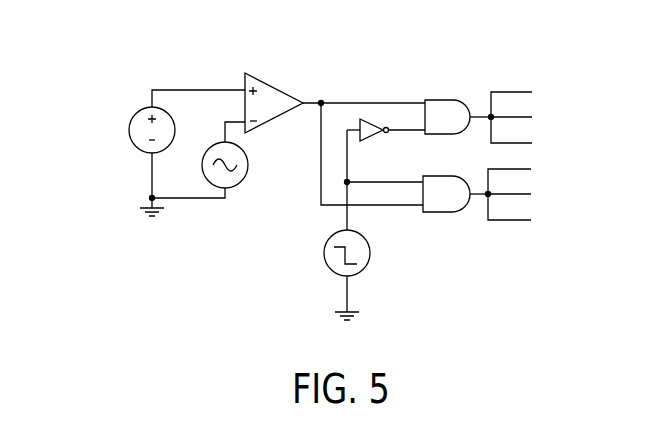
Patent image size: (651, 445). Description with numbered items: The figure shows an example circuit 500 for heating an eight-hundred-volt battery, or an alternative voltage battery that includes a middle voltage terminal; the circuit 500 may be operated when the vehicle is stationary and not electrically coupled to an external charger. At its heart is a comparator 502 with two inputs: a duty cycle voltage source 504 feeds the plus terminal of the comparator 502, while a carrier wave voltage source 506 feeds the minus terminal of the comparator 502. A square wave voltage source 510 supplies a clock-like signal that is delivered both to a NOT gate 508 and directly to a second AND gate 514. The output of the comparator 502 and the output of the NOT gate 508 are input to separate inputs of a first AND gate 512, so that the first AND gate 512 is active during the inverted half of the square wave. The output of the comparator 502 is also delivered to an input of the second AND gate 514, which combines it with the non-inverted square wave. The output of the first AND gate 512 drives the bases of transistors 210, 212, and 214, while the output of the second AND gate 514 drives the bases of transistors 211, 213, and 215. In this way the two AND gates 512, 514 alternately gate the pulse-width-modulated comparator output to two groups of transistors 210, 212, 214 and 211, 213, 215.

The circuit 500 is at (111, 31).
The comparator 502 is at (291, 76).
The duty cycle voltage source 504 is at (176, 128).
The carrier wave voltage source 506 is at (248, 170).
The NOT gate 508 is at (358, 128).
The square wave voltage source 510 is at (323, 252).
The AND gate 512 is at (473, 90).
The AND gate 514 is at (472, 170).
The transistor 210 is at (531, 98).
The transistor 212 is at (531, 117).
The transistor 214 is at (531, 136).
The transistor 211 is at (530, 175).
The transistor 213 is at (530, 193).
The transistor 215 is at (530, 213).